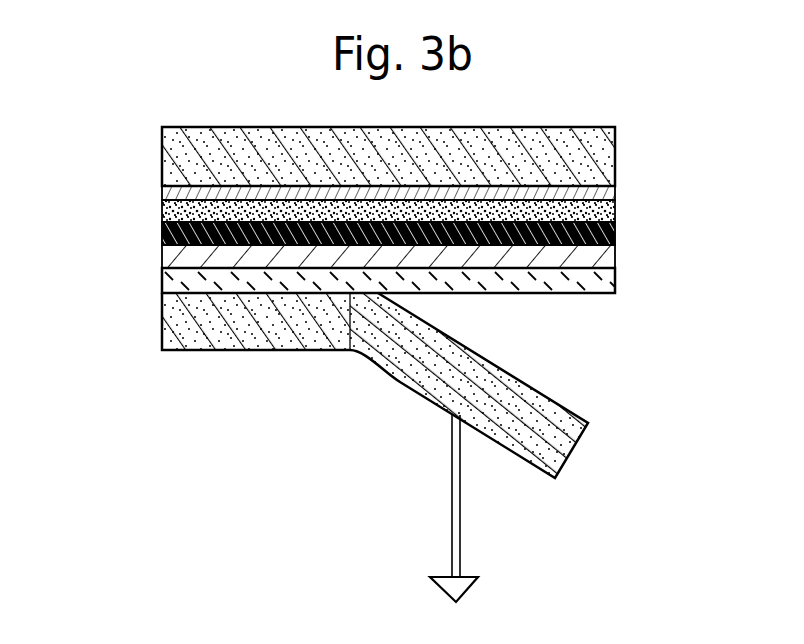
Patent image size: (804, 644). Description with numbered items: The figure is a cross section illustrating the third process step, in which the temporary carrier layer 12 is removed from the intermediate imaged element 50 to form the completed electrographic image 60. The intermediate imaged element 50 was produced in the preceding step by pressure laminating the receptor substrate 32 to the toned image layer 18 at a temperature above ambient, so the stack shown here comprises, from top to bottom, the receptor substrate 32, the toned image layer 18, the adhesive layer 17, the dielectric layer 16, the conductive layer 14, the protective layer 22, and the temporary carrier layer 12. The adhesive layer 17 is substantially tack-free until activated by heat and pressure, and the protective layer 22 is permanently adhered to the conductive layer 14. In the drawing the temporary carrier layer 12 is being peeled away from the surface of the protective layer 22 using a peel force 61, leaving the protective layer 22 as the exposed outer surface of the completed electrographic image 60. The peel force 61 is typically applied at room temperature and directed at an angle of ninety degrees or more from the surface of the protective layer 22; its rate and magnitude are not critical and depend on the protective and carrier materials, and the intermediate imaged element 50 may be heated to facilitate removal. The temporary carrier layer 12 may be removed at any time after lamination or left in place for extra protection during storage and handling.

The receptor substrate 32 is at (615, 140).
The toned image layer 18 is at (162, 192).
The adhesive layer 17 is at (162, 211).
The dielectric layer 16 is at (615, 236).
The conductive layer 14 is at (162, 256).
The protective layer 22 is at (593, 294).
The temporary carrier layer 12 is at (162, 334).
The intermediate imaged element 50 is at (162, 293).
The completed electrographic image 60 is at (618, 262).
The peel force 61 is at (452, 527).